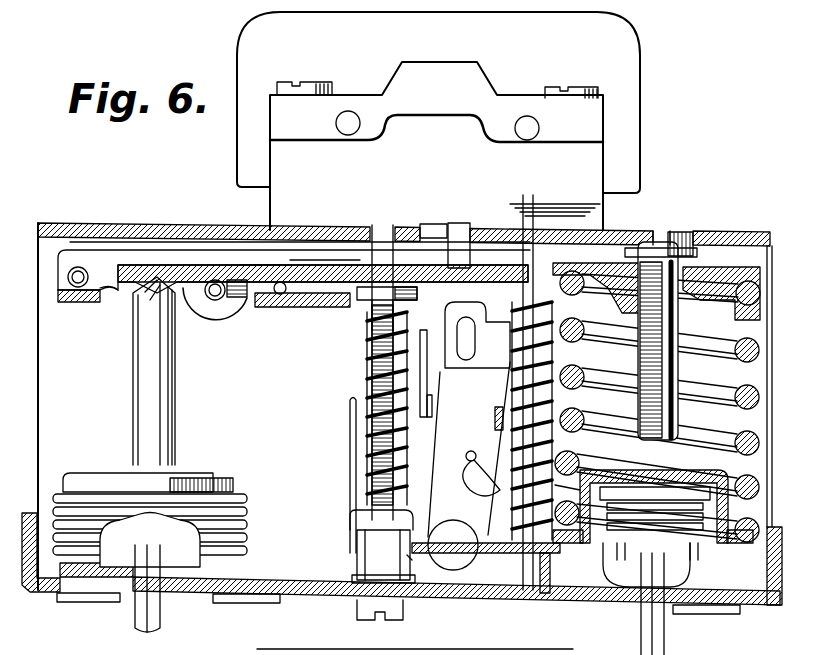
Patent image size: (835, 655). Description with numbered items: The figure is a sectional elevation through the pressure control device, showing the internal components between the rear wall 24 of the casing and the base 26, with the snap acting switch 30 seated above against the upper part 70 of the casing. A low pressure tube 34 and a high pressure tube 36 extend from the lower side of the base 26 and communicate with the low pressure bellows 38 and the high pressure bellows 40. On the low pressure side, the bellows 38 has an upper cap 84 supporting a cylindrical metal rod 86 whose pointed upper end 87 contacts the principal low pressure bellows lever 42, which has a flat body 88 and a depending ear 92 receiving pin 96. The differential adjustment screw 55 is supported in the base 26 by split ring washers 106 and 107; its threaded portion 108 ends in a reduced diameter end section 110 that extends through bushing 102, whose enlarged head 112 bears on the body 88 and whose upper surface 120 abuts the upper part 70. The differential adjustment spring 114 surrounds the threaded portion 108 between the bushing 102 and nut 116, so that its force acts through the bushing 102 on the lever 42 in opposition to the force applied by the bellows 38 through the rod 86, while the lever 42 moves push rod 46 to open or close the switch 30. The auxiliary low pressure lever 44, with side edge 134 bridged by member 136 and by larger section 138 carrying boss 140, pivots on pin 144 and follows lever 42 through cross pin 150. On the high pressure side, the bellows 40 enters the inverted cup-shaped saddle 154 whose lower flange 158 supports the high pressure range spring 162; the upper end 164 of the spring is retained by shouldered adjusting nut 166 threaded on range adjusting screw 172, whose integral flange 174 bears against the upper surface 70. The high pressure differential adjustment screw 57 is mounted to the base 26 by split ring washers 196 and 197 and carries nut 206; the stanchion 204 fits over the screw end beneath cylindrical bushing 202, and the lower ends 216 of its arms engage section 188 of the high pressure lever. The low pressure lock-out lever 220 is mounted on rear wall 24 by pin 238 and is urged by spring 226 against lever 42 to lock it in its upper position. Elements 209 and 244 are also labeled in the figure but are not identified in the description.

The rear wall 24 is at (72, 391).
The base 26 is at (300, 592).
The snap acting switch 30 is at (598, 157).
The low pressure tube 34 is at (162, 626).
The high pressure tube 36 is at (667, 636).
The low pressure bellows 38 is at (247, 521).
The high pressure bellows 40 is at (690, 532).
The principal low pressure bellows lever 42 is at (247, 262).
The auxiliary low pressure lever 44 is at (80, 305).
The push rod 46 is at (470, 258).
The differential adjustment screw 55 is at (395, 622).
The adjustment screw 57 is at (540, 600).
The upper part of casing 70 is at (448, 228).
The upper cap 84 is at (195, 470).
The cylindrical metal rod 86 is at (176, 380).
The pointed upper end 87 is at (187, 312).
The flat body 88 is at (360, 265).
The ear 92 is at (216, 300).
The pin 96 is at (238, 300).
The bushing 102 is at (433, 240).
The split ring washer 106 is at (355, 605).
The split ring washer 107 is at (355, 577).
The threaded portion 108 is at (367, 386).
The reduced diameter end section 110 is at (365, 238).
The enlarged head 112 is at (357, 298).
The differential adjustment spring 114 is at (420, 336).
The nut 116 is at (350, 520).
The upper surface of bushing 120 is at (437, 228).
The side edge 134 is at (100, 253).
The bridging member 136 is at (75, 303).
The larger section 138 is at (292, 308).
The downwardly extending boss 140 is at (395, 315).
The pin 144 is at (74, 267).
The cross pin 150 is at (287, 289).
The inverted cup-shaped saddle 154 is at (720, 500).
The lower flange 158 is at (713, 560).
The high pressure range spring 162 is at (742, 362).
The upper end of range spring 164 is at (745, 308).
The shouldered adjusting nut 166 is at (770, 246).
The high pressure range adjusting screw 172 is at (648, 268).
The integral flange 174 is at (690, 248).
The section of high pressure lever 188 is at (408, 558).
The split ring washer 196 is at (505, 557).
The split ring washer 197 is at (497, 586).
The cylindrical bushing 202 is at (580, 228).
The stanchion 204 is at (556, 296).
The nut 206 is at (505, 430).
The lever plate 209 is at (510, 381).
The lower ends of stanchion arms 216 is at (550, 560).
The low pressure lock-out lever 220 is at (472, 428).
The spring 226 is at (472, 468).
The pin 238 is at (463, 520).
The lead 244 is at (560, 490).